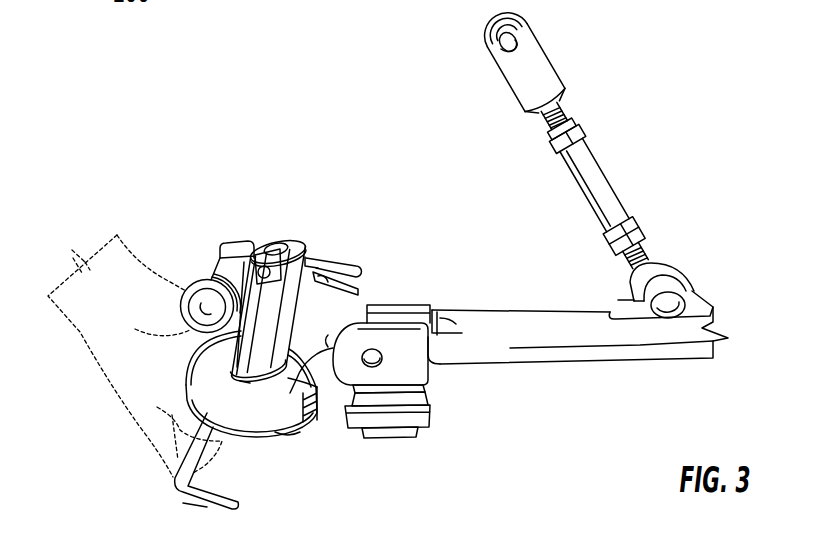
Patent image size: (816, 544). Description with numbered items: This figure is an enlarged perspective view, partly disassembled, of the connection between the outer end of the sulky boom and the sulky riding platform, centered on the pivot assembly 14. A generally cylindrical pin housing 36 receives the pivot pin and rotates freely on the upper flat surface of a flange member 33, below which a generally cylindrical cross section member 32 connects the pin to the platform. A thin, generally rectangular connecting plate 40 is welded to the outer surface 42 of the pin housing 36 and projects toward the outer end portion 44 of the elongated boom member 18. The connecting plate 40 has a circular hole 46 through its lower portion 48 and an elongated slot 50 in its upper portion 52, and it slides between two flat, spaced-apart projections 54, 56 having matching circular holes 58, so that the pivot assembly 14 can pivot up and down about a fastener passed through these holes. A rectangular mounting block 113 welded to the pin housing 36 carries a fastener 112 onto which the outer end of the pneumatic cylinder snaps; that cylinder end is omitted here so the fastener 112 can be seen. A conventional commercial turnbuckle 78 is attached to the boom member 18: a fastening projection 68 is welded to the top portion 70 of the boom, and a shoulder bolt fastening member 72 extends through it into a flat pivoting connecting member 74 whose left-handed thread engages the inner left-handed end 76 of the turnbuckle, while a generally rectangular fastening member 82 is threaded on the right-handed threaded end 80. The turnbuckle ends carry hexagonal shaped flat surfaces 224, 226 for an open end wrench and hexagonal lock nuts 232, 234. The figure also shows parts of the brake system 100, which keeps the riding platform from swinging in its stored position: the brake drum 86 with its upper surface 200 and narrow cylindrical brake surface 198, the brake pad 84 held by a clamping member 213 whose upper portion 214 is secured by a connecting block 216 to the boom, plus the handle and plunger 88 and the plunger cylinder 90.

The pivot assembly 14 is at (378, 256).
The elongated boom member 18 is at (613, 348).
The generally cylindrical cross section member 32 is at (176, 480).
The flange member 33 is at (248, 378).
The pin housing 36 is at (243, 350).
The connecting plate 40 is at (337, 312).
The outer surface 42 is at (245, 297).
The outer end portion 44 is at (510, 322).
The circular hole 46 is at (292, 420).
The lower portion 48 is at (325, 360).
The elongated slot 50 is at (318, 273).
The upper portion 52 is at (360, 268).
The projection 54 is at (447, 306).
The projection 56 is at (402, 303).
The circular hole 58 is at (371, 373).
The fastening projection 68 is at (652, 285).
The top portion 70 is at (602, 314).
The shoulder bolt fastening member 72 is at (668, 307).
The flat pivoting connecting member 74 is at (631, 284).
The inner left-handed end 76 is at (624, 260).
The turnbuckle 78 is at (608, 172).
The right-handed threaded end 80 is at (545, 125).
The fastening member 82 is at (535, 68).
The brake pad 84 is at (430, 410).
The brake drum 86 is at (283, 422).
The handle and plunger 88 is at (203, 303).
The plunger cylinder 90 is at (220, 267).
The brake system 100 is at (164, 426).
The fastener 112 is at (266, 258).
The mounting block 113 is at (288, 247).
The cylindrical brake surface 198 is at (213, 402).
The upper surface 200 is at (213, 368).
The clamping member 213 is at (420, 432).
The upper portion 214 is at (428, 397).
The connecting block 216 is at (426, 386).
The hexagonal shaped flat surfaces 224 is at (602, 231).
The hexagonal shaped flat surfaces 226 is at (584, 135).
The hexagonal lock nut 232 is at (635, 222).
The hexagonal lock nut 234 is at (577, 127).